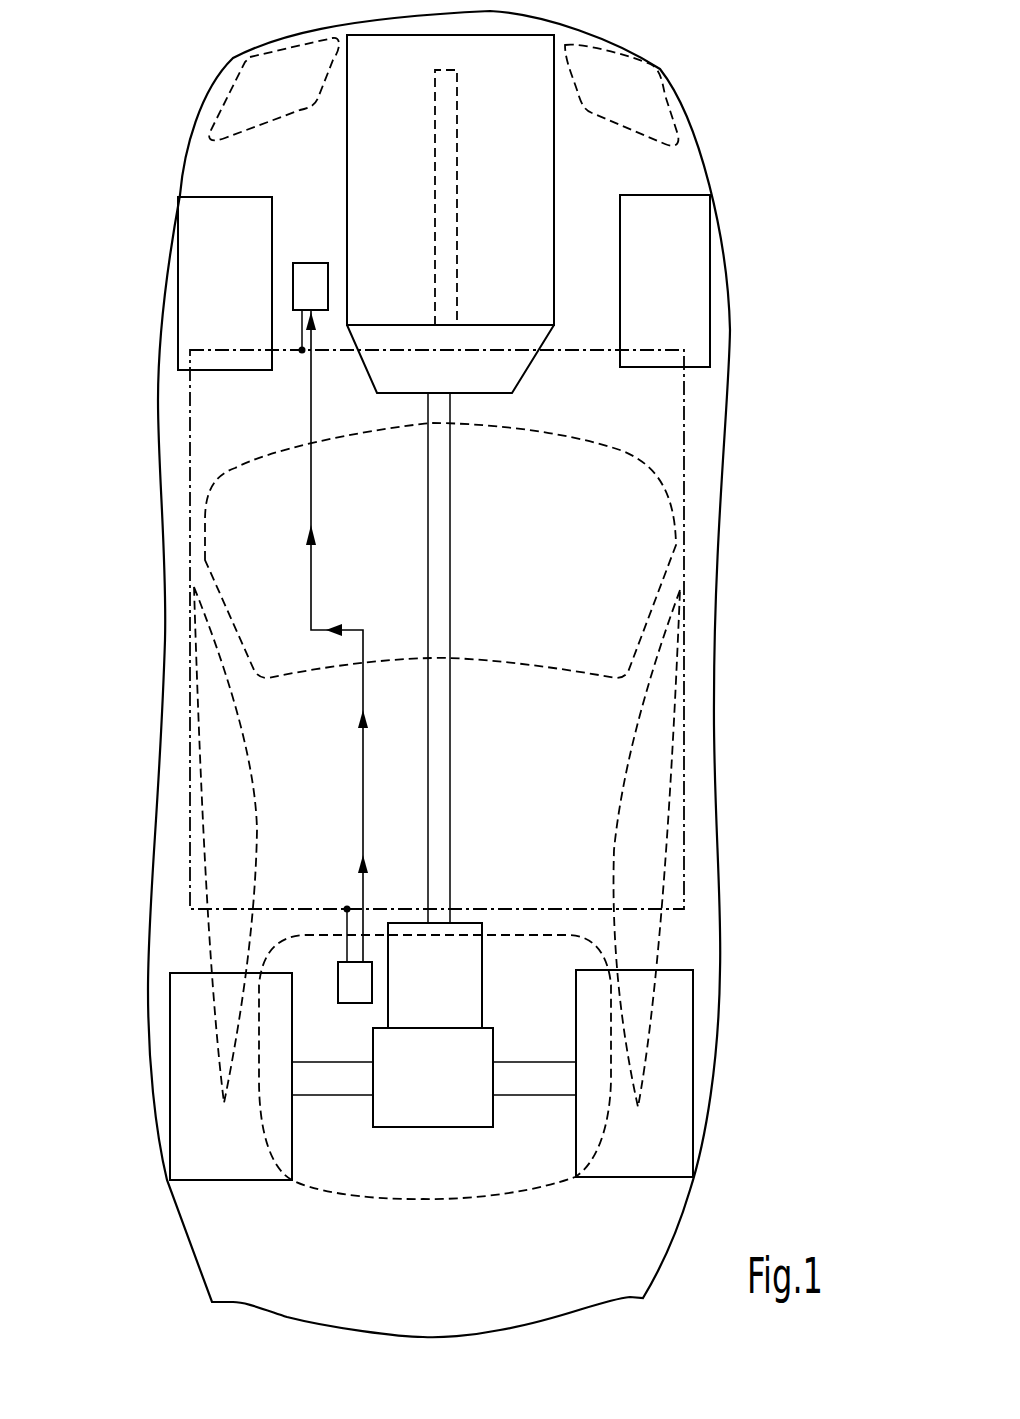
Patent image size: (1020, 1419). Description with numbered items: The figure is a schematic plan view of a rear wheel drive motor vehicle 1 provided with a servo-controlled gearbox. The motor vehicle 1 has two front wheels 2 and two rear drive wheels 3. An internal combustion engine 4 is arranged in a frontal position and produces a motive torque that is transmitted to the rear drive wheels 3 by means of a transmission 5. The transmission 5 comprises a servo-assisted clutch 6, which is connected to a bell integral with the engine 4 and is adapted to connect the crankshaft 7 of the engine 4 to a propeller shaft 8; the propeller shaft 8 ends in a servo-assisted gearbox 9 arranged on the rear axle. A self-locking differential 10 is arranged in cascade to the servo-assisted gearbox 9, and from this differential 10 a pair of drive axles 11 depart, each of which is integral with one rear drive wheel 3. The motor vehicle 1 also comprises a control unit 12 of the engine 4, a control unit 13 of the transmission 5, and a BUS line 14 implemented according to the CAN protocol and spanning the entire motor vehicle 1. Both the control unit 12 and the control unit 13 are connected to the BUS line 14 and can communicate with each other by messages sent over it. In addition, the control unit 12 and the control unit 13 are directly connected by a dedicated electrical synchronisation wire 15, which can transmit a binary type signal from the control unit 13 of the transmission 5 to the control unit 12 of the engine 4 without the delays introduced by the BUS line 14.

The motor vehicle 1 is at (147, 1178).
The front wheels 2 is at (187, 240).
The rear drive wheels 3 is at (181, 1068).
The internal combustion engine 4 is at (530, 117).
The transmission 5 is at (734, 713).
The servo-assisted clutch 6 is at (512, 386).
The crankshaft 7 is at (432, 84).
The propeller shaft 8 is at (440, 553).
The servo-assisted gearbox 9 is at (468, 927).
The self-locking differential 10 is at (443, 1127).
The drive axles 11 is at (332, 1087).
The control unit of engine 12 is at (311, 266).
The control unit of transmission 13 is at (352, 1003).
The BUS line 14 is at (687, 700).
The synchronisation wire 15 is at (311, 572).